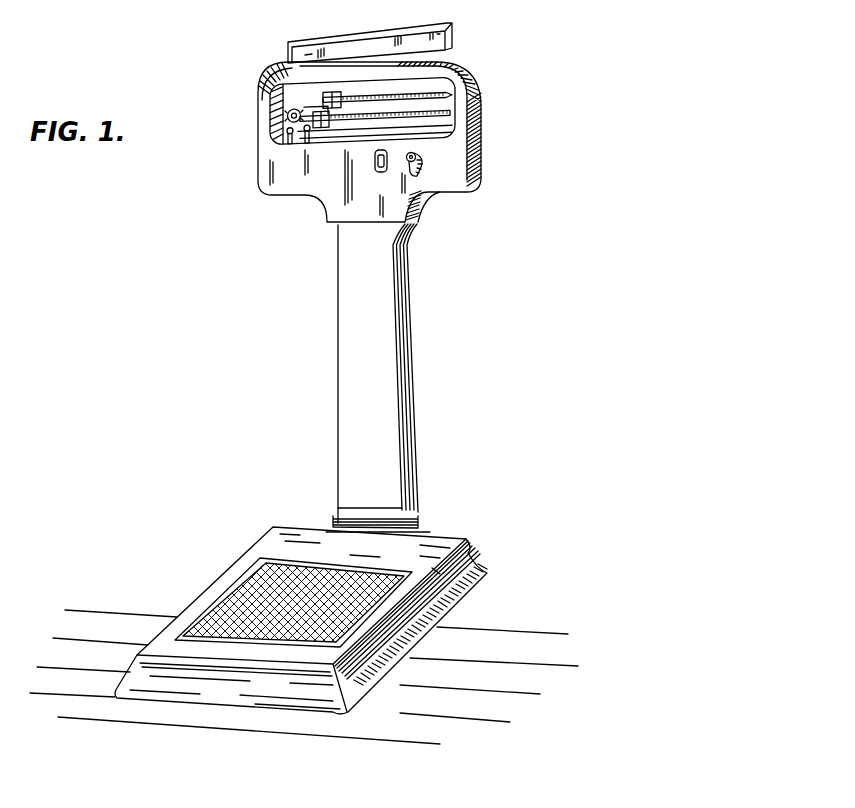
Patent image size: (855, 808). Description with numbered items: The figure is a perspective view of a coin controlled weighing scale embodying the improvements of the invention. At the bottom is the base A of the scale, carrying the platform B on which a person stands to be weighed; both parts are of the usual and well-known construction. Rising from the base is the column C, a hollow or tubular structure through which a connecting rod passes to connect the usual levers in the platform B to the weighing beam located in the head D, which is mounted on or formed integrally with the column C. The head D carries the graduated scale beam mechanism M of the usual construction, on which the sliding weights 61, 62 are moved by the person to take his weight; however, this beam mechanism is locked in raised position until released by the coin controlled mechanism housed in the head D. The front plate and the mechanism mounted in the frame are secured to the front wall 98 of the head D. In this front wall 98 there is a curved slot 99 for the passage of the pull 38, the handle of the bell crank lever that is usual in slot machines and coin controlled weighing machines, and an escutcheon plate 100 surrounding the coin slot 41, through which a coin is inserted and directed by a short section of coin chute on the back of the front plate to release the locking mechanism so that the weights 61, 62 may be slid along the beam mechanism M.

The base A is at (423, 647).
The platform B is at (292, 603).
The column C is at (418, 426).
The head D is at (469, 178).
The graduated scale beam mechanism M is at (449, 106).
The weight 62 is at (318, 92).
The weight 61 is at (300, 146).
The front wall 98 is at (322, 176).
The coin slot 41 is at (379, 172).
The curved slot 99 is at (421, 172).
The pull 38 is at (428, 157).
The escutcheon plate 100 is at (420, 205).